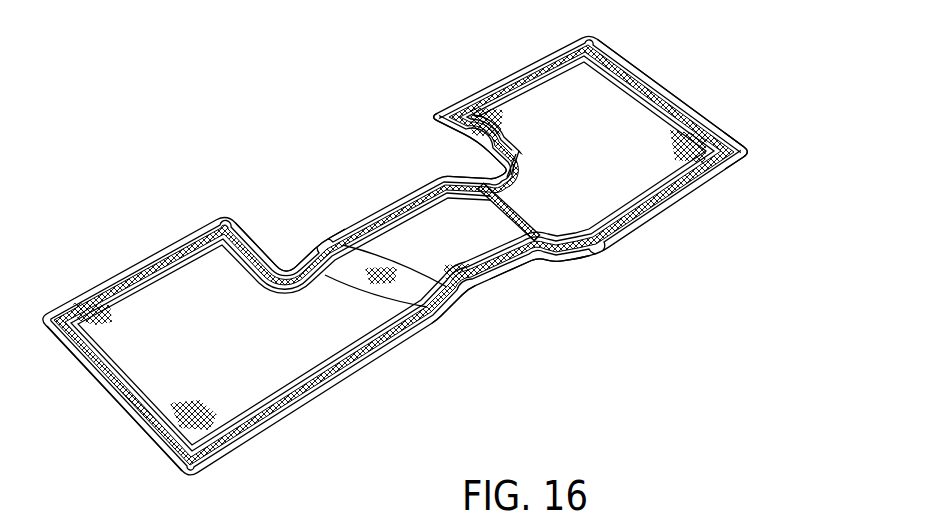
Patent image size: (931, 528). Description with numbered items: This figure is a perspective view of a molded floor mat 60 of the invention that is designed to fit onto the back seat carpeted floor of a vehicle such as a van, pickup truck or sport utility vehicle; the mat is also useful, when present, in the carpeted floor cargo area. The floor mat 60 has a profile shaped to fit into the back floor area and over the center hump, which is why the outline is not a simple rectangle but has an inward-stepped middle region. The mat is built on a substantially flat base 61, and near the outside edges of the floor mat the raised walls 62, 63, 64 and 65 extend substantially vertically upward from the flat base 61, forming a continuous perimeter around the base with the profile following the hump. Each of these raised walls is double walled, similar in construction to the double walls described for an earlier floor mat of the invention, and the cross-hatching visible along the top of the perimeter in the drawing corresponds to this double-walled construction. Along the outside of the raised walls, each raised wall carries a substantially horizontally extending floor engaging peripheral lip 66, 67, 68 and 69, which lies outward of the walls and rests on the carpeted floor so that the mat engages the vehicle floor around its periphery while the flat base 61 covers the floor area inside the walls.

The floor mat 60 is at (421, 277).
The substantially flat base 61 is at (249, 356).
The raised wall 62 is at (90, 372).
The raised wall 63 is at (396, 357).
The raised wall 64 is at (683, 102).
The raised wall 65 is at (389, 206).
The floor engaging peripheral lip 66 is at (148, 435).
The floor engaging peripheral lip 67 is at (489, 284).
The floor engaging peripheral lip 68 is at (752, 150).
The floor engaging peripheral lip 69 is at (432, 118).